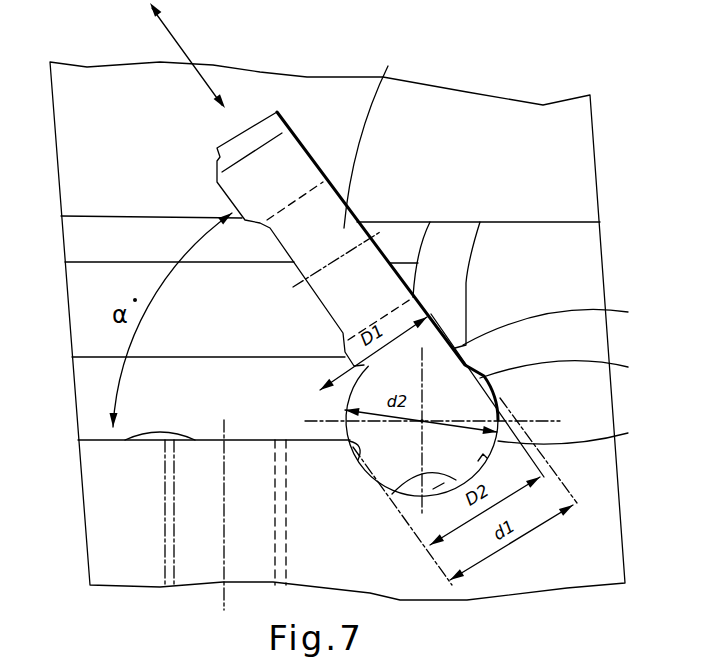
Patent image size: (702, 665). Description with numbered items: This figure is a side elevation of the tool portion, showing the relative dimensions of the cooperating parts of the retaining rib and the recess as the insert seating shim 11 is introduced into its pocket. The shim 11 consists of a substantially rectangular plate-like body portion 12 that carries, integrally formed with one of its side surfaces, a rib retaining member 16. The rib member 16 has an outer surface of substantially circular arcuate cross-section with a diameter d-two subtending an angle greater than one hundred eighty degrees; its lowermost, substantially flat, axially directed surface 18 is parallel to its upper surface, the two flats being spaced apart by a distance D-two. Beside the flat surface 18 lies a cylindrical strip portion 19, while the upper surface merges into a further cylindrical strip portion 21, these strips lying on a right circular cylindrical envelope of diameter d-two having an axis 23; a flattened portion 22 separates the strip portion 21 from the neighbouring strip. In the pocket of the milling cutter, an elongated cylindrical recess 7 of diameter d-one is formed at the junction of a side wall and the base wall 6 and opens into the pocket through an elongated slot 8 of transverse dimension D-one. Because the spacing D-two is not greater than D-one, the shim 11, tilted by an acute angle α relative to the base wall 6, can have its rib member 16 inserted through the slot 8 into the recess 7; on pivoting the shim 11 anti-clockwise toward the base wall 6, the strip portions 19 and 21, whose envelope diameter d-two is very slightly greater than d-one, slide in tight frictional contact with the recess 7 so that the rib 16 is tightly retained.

The base wall 6 is at (128, 441).
The elongated cylindrical recess 7 is at (564, 369).
The elongated slot 8 is at (555, 324).
The insert seating shim 11 is at (312, 148).
The body portion 12 is at (373, 138).
The rib retaining member 16 is at (406, 455).
The lowermost flat axially directed surface 18 is at (362, 446).
The cylindrical strip portion 19 is at (345, 410).
The cylindrical strip portion 21 is at (577, 433).
The flattened portion 22 is at (410, 481).
The axis 23 is at (423, 419).